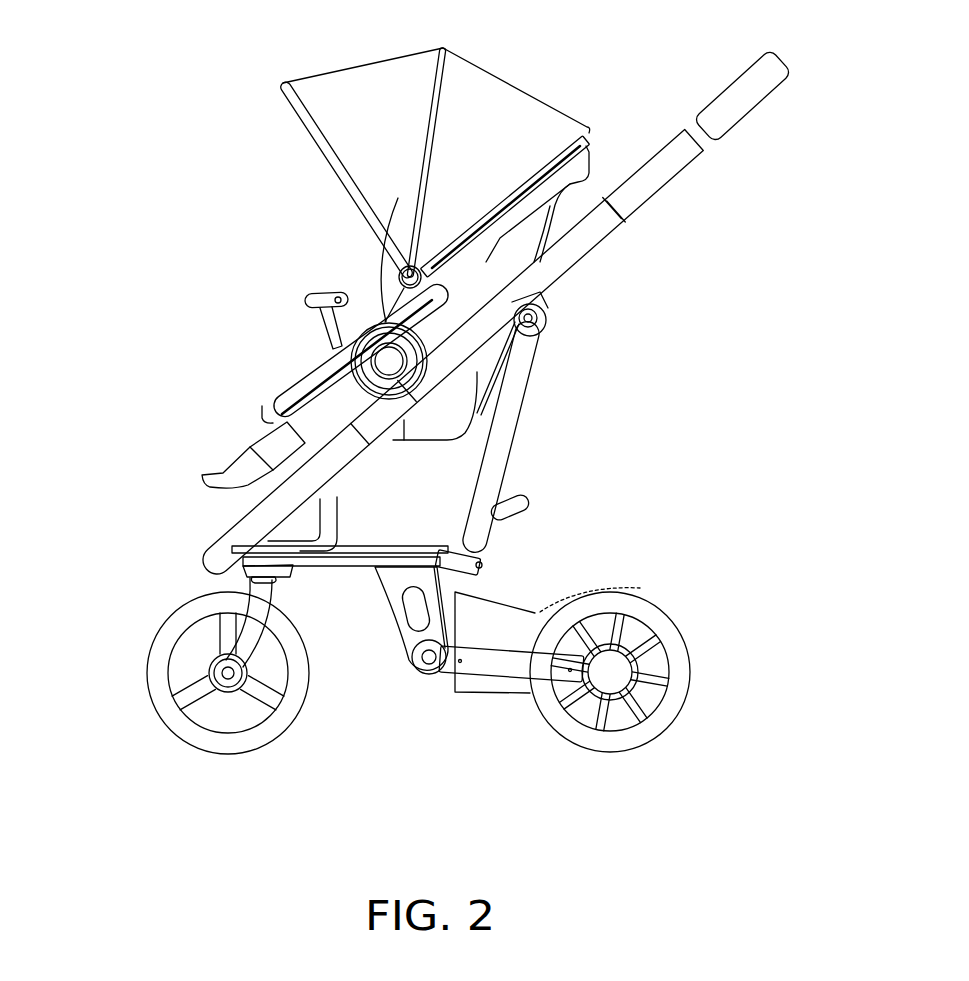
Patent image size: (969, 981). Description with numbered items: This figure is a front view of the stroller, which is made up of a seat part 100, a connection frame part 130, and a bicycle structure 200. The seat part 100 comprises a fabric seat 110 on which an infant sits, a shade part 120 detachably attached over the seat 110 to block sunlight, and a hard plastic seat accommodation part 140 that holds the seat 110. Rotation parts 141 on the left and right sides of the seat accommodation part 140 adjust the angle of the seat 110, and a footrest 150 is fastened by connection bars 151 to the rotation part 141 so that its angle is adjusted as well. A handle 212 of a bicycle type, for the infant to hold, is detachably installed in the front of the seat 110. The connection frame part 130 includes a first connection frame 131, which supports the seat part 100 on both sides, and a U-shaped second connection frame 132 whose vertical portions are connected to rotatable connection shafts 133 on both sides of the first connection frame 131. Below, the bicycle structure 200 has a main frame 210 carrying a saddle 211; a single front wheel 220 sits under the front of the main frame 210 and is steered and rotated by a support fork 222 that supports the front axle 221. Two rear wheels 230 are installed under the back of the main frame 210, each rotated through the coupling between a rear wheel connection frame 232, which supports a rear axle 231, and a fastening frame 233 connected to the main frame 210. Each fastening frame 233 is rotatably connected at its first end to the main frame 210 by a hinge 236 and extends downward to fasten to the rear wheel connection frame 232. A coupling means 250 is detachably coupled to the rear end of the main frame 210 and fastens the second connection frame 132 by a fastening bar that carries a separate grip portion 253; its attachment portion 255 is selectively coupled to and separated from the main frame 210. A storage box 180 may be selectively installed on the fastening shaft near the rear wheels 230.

The seat part 100 is at (244, 92).
The seat 110 is at (297, 383).
The shade part 120 is at (360, 77).
The connection frame part 130 is at (710, 270).
The first connection frame 131 is at (600, 230).
The second connection frame 132 is at (503, 427).
The connection shaft 133 is at (550, 317).
The seat accommodation part 140 is at (443, 277).
The rotation part 141 is at (380, 320).
The footrest 150 is at (232, 470).
The connection bar 151 is at (272, 443).
The storage box 180 is at (545, 612).
The bicycle structure 200 is at (620, 536).
The main frame 210 is at (410, 548).
The saddle 211 is at (333, 520).
The handle 212 is at (335, 353).
The front wheel 220 is at (177, 727).
The front axle 221 is at (225, 670).
The support fork 222 is at (255, 612).
The rear wheel 230 is at (672, 708).
The rear axle 231 is at (617, 667).
The rear wheel connection frame 232 is at (493, 663).
The fastening frame 233 is at (397, 630).
The hinge 236 is at (428, 568).
The coupling means 250 is at (473, 587).
The grip portion 253 is at (530, 497).
The attachment portion 255 is at (480, 563).